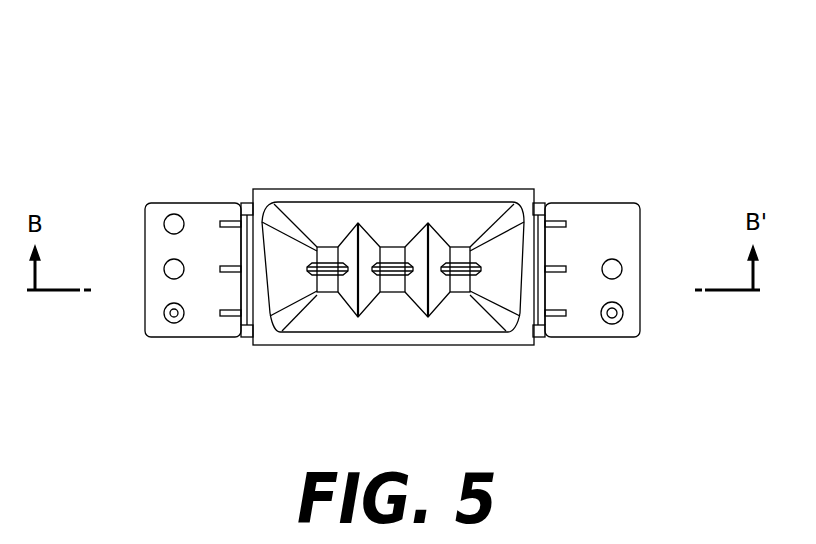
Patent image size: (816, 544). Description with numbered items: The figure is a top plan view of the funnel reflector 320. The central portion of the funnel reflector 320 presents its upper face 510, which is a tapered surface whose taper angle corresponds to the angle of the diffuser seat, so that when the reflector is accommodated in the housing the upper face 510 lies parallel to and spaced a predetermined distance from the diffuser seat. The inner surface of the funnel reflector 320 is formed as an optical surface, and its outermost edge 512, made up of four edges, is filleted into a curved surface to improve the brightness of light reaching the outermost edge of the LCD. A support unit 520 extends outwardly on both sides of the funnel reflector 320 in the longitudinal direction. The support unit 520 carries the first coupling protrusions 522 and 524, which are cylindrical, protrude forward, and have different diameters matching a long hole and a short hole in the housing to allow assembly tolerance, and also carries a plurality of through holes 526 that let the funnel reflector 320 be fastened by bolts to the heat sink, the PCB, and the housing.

The funnel reflector 320 is at (206, 62).
The upper face 510 is at (540, 206).
The outermost edge 512 is at (272, 203).
The support unit 520 is at (203, 207).
The first coupling protrusion 522 is at (176, 322).
The first coupling protrusion 524 is at (612, 322).
The through hole 526 is at (164, 271).